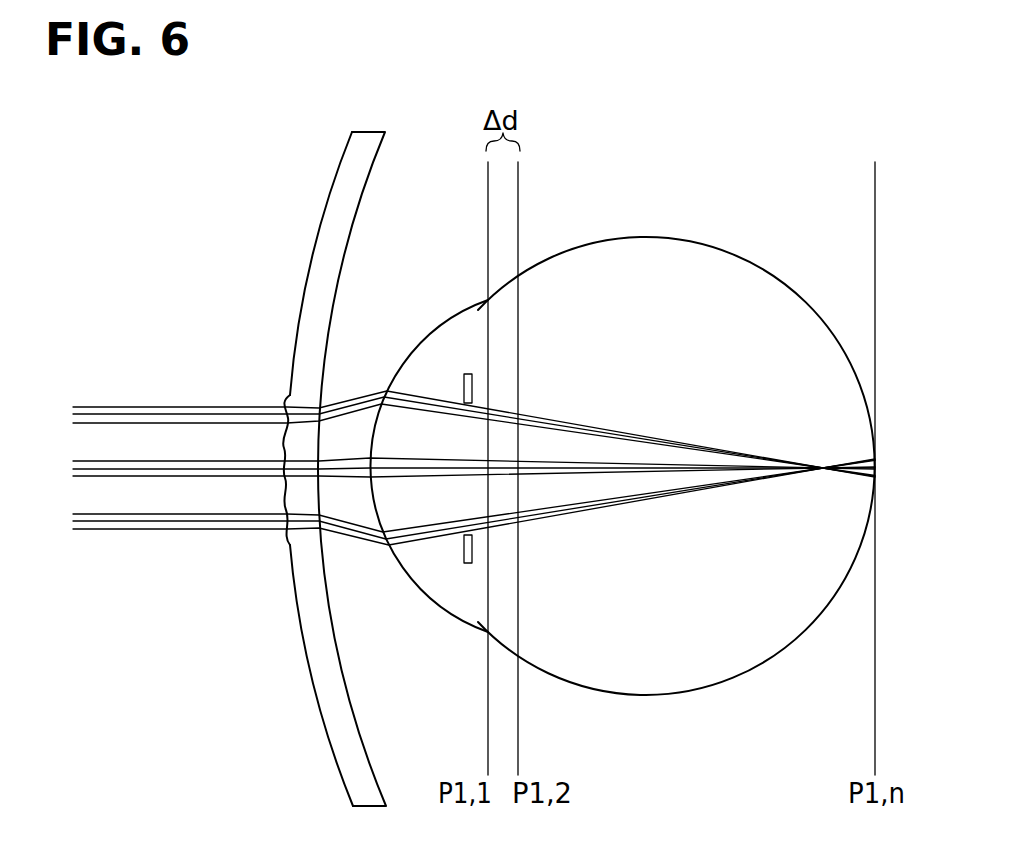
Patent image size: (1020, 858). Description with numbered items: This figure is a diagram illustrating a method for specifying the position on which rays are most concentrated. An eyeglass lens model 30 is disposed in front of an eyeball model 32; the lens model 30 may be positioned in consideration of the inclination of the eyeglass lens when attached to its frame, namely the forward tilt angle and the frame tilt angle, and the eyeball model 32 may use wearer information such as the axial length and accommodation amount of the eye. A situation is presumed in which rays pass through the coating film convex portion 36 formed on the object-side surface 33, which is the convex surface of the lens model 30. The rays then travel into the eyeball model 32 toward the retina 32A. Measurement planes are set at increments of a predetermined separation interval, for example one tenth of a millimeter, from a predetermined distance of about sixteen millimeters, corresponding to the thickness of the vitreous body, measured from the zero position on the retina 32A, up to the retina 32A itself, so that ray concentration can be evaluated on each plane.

The eyeglass lens model 30 is at (323, 469).
The object-side surface 33 is at (307, 278).
The coating film convex portion 36 is at (284, 404).
The eyeball model 32 is at (804, 299).
The retina 32A is at (857, 386).